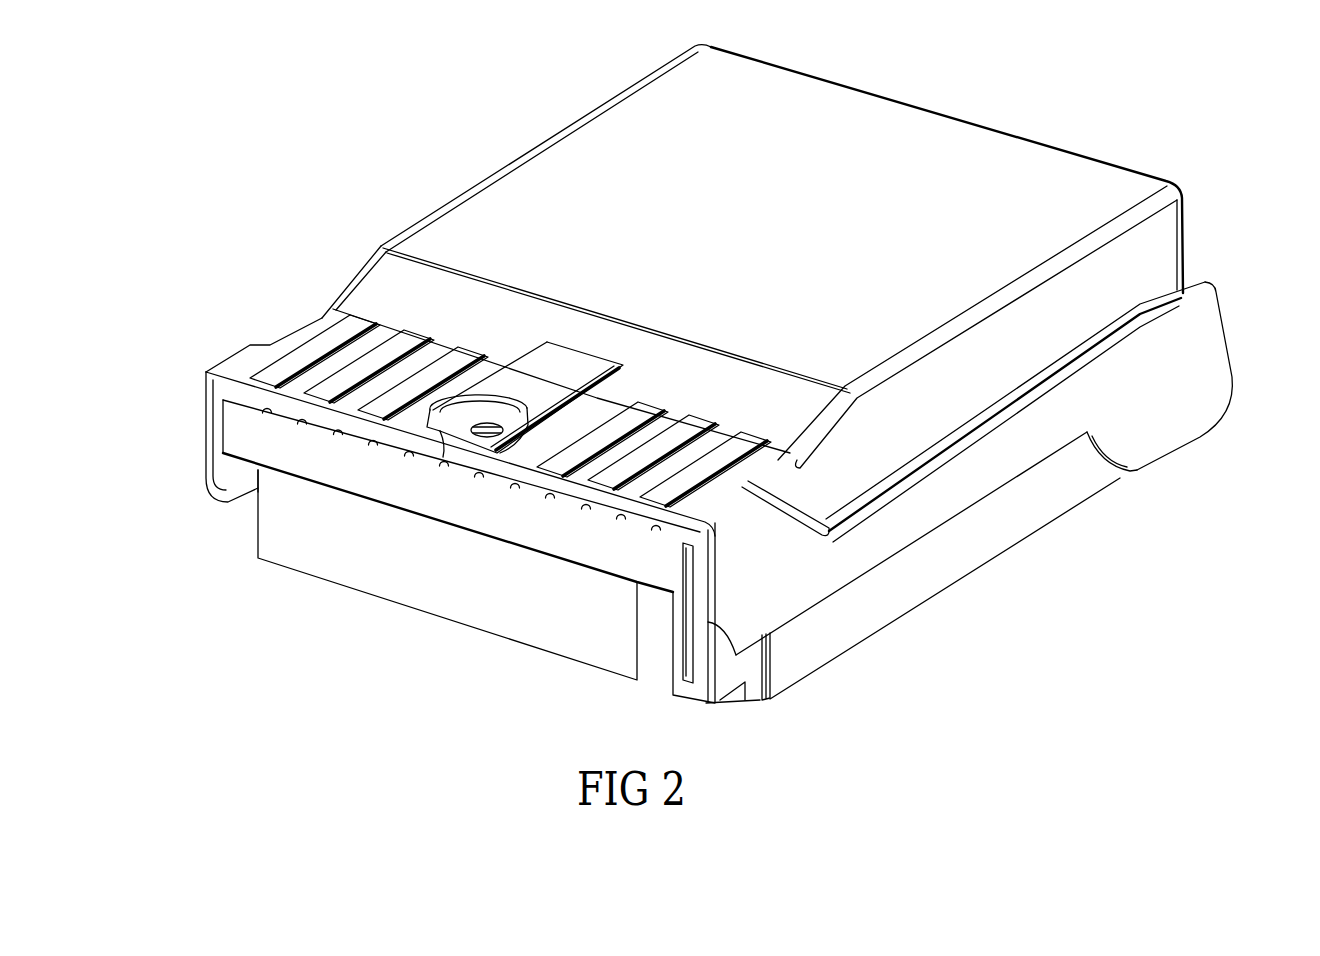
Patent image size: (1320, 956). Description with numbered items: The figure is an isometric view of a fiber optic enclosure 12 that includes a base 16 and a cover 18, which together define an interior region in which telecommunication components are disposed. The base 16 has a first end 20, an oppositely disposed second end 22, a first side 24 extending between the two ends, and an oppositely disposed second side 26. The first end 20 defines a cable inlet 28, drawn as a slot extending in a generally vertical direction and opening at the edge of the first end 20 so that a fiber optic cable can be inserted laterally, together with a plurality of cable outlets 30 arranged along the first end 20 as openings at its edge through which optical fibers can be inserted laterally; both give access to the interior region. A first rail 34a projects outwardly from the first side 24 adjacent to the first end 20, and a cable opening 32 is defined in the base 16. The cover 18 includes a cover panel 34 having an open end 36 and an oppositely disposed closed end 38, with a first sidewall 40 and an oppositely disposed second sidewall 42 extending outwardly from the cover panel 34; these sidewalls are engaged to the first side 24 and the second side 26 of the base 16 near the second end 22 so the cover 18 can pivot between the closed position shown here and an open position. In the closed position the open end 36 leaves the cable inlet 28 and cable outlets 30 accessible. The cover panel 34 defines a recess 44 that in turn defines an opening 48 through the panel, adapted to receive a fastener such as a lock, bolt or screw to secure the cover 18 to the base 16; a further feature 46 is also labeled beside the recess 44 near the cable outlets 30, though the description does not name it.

The fiber optic enclosure 12 is at (424, 94).
The base 16 is at (973, 547).
The cover 18 is at (929, 144).
The first end 20 is at (549, 623).
The second end 22 is at (1222, 320).
The first side 24 is at (888, 602).
The second side 26 is at (257, 519).
The cable inlet 28 is at (675, 650).
The cable outlets 30 is at (417, 467).
The cable opening 32 is at (510, 411).
The cover panel 34 is at (500, 215).
The first rail 34a is at (770, 675).
The open end 36 is at (218, 388).
The closed end 38 is at (1186, 221).
The first sidewall 40 is at (995, 468).
The second sidewall 42 is at (352, 290).
The recess 44 is at (483, 408).
The slit 46 is at (428, 420).
The opening 48 is at (602, 358).